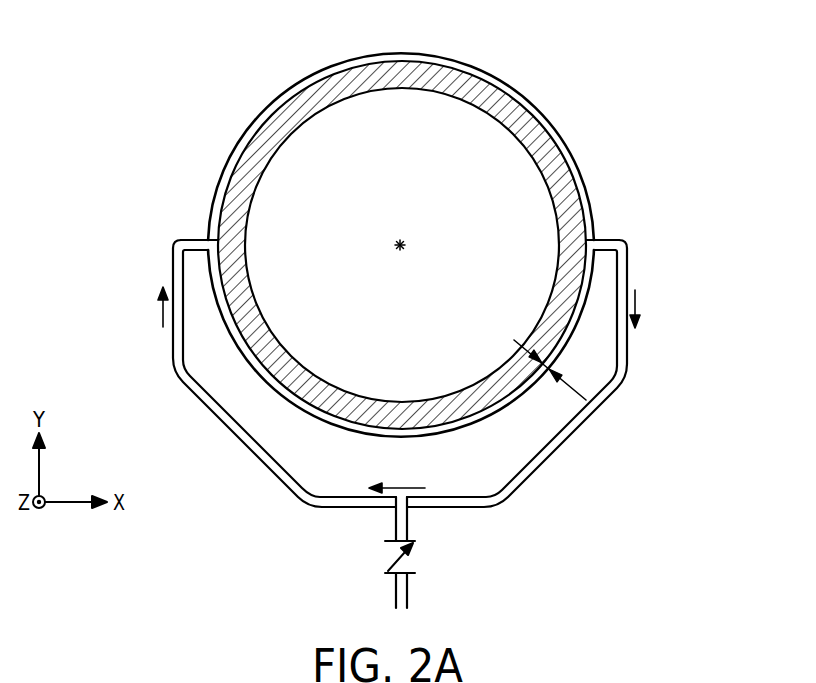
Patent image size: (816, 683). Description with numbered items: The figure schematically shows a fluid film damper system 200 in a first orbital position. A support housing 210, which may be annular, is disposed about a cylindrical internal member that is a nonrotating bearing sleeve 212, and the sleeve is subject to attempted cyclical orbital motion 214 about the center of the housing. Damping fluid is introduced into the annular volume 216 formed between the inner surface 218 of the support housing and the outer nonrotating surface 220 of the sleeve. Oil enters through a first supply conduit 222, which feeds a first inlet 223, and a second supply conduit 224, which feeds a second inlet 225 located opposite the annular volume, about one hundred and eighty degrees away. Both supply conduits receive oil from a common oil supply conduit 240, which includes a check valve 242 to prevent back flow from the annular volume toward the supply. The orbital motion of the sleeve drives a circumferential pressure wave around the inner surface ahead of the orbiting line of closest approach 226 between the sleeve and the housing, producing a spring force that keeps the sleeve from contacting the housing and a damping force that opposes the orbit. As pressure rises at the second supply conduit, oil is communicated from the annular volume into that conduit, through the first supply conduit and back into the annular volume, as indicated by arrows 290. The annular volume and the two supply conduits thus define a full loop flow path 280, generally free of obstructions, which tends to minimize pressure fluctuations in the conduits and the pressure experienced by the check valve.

The fluid film damper system 200 is at (593, 74).
The support housing 210 is at (247, 118).
The sleeve 212 is at (447, 78).
The orbital motion 214 is at (402, 244).
The annular volume 216 is at (318, 77).
The inner surface 218 is at (288, 95).
The outer nonrotating surface 220 is at (251, 153).
The first supply conduit 222 is at (186, 236).
The first inlet 223 is at (210, 242).
The second supply conduit 224 is at (607, 237).
The second inlet 225 is at (590, 241).
The orbiting line of closest approach 226 is at (584, 383).
The common oil supply conduit 240 is at (408, 586).
The check valve 242 is at (358, 552).
The full loop flow path 280 is at (465, 502).
The arrows 290 is at (162, 308).